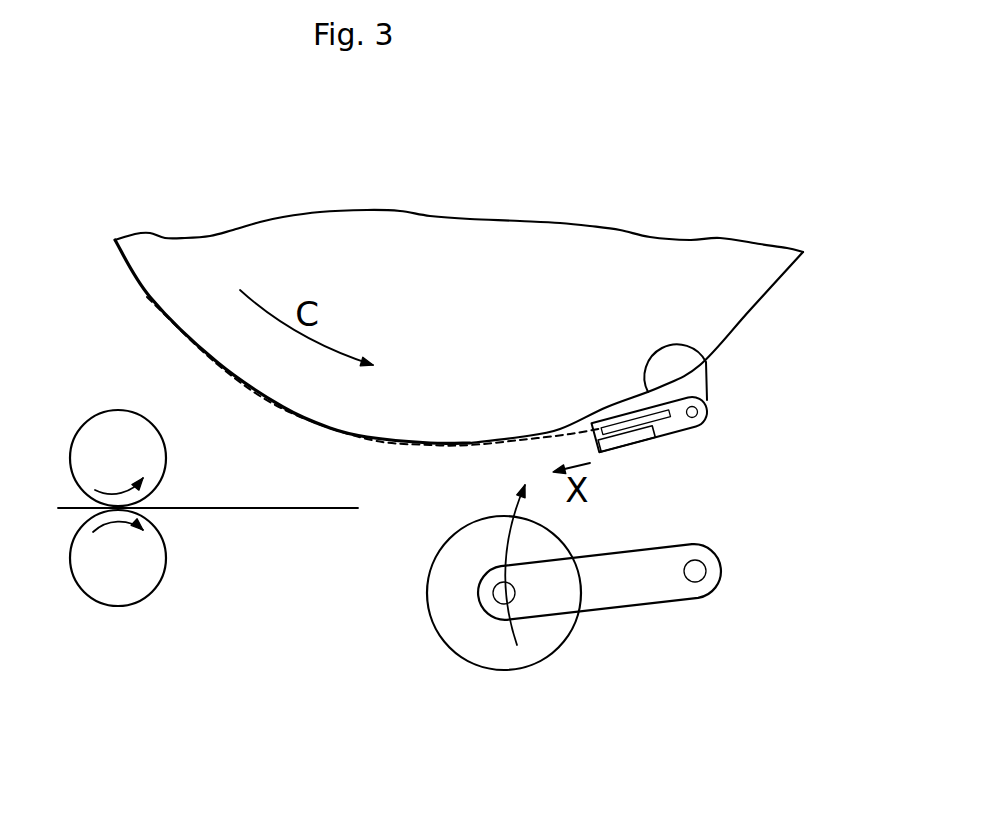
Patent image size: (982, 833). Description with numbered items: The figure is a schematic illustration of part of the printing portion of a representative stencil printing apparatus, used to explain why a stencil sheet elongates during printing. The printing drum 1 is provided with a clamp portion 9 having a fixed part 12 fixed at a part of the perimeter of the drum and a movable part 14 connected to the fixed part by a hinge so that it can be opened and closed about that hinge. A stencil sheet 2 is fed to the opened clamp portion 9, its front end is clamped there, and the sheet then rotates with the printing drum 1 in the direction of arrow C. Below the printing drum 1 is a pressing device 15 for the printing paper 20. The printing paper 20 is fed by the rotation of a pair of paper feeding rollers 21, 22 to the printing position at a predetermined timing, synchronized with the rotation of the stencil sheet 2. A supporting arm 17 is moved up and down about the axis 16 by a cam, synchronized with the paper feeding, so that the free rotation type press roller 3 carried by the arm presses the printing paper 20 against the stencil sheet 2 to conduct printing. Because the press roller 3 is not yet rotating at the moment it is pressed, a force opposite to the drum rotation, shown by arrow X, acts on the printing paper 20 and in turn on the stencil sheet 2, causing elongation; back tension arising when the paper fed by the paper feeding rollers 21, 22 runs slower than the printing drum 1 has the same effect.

The printing drum 1 is at (669, 245).
The stencil sheet 2 is at (147, 297).
The press roller 3 is at (542, 657).
The clamp portion 9 is at (720, 407).
The fixed part 12 is at (708, 358).
The movable part 14 is at (653, 440).
The pressing device 15 is at (432, 625).
The axis 16 is at (706, 566).
The supporting arm 17 is at (668, 600).
The printing paper 20 is at (247, 505).
The paper feeding roller 21 is at (92, 422).
The paper feeding roller 22 is at (107, 600).